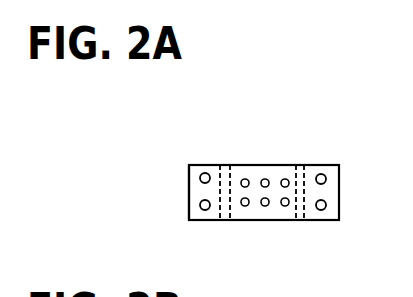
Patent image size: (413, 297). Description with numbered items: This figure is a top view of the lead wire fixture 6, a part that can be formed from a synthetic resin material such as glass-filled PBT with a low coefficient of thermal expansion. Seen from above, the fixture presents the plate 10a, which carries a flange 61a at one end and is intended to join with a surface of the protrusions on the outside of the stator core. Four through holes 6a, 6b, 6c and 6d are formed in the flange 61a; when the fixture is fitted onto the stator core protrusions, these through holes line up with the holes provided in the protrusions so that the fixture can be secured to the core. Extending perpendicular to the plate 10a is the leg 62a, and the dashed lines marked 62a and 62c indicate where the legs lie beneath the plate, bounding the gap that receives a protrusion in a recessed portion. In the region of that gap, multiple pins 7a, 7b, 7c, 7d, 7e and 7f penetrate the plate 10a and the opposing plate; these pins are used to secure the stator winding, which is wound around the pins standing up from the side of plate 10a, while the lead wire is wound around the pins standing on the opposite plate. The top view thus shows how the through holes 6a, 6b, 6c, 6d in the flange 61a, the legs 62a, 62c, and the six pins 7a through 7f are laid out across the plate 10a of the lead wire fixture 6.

The lead wire fixture 6 is at (338, 117).
The through hole 6a is at (204, 173).
The through hole 6b is at (200, 205).
The through hole 6c is at (326, 179).
The through hole 6d is at (326, 205).
The pin 7a is at (245, 179).
The pin 7b is at (265, 179).
The pin 7c is at (286, 179).
The pin 7d is at (245, 206).
The pin 7e is at (265, 206).
The pin 7f is at (285, 206).
The plate 10a is at (232, 174).
The flange 61a is at (197, 188).
The leg 62a is at (224, 222).
The slit 62c is at (300, 221).